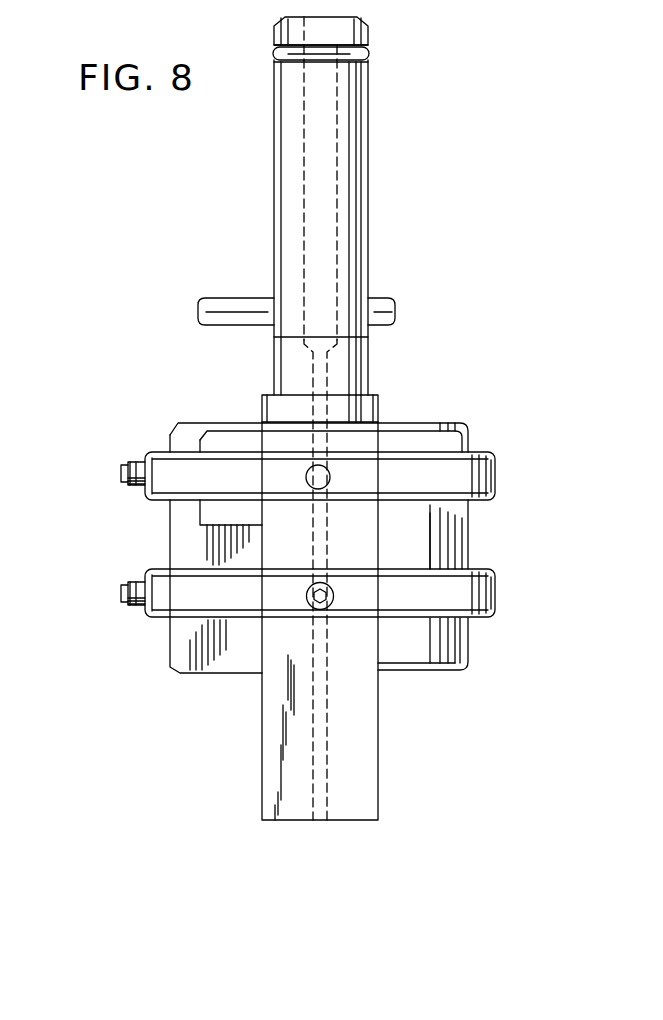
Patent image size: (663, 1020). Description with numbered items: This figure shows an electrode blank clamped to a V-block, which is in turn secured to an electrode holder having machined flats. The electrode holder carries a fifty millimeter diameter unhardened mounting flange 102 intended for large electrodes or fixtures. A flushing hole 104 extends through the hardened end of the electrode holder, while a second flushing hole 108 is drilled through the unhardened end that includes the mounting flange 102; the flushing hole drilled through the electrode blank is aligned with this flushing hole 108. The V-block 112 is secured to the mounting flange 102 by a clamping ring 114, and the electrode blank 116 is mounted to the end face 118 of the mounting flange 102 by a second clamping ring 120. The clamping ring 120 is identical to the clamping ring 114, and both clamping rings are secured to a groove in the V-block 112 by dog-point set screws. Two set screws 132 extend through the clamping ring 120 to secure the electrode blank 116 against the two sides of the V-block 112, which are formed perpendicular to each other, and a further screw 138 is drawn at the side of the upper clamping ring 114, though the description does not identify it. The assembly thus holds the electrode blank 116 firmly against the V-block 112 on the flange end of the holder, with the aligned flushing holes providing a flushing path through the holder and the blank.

The mounting flange 102 is at (226, 440).
The flushing hole 104 is at (340, 107).
The flushing hole 108 is at (328, 367).
The V-block 112 is at (432, 545).
The clamping ring 114 is at (498, 478).
The electrode blank 116 is at (353, 753).
The end face 118 is at (252, 530).
The clamping ring 120 is at (498, 598).
The set screws 132 is at (120, 590).
The set screw 138 is at (120, 470).